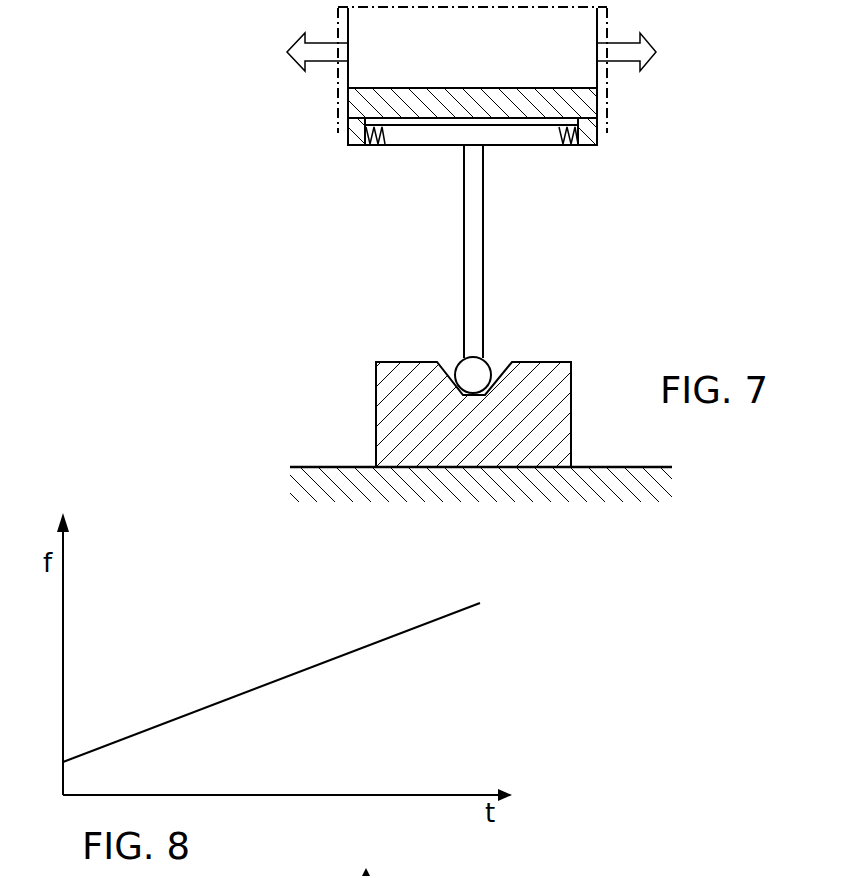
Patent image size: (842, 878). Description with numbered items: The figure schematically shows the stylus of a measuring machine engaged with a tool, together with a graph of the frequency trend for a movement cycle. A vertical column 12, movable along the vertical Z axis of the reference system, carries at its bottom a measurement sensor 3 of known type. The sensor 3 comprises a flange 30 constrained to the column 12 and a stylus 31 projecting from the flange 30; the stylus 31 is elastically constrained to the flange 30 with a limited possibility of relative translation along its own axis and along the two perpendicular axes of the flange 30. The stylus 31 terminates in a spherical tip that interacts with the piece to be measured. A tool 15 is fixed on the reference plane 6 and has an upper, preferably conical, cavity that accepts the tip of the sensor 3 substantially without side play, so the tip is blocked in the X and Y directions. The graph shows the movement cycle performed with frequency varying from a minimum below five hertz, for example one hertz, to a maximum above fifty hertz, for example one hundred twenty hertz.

The vertical column 12 is at (387, 52).
The flange 30 is at (578, 107).
The measurement sensor 3 is at (479, 269).
The stylus 31 is at (472, 316).
The tool 15 is at (405, 430).
The reference plane 6 is at (347, 488).